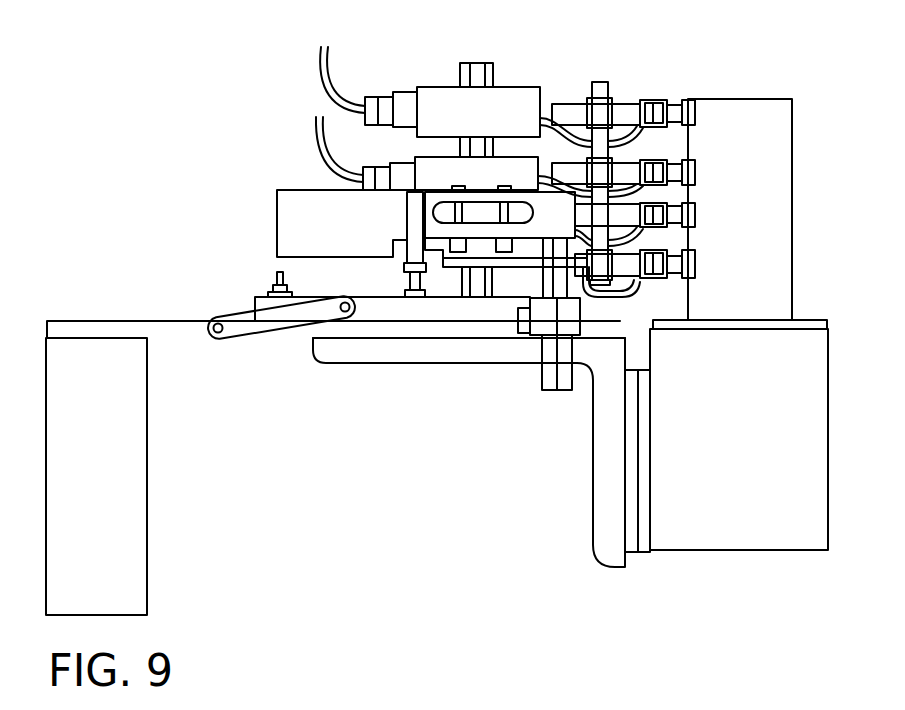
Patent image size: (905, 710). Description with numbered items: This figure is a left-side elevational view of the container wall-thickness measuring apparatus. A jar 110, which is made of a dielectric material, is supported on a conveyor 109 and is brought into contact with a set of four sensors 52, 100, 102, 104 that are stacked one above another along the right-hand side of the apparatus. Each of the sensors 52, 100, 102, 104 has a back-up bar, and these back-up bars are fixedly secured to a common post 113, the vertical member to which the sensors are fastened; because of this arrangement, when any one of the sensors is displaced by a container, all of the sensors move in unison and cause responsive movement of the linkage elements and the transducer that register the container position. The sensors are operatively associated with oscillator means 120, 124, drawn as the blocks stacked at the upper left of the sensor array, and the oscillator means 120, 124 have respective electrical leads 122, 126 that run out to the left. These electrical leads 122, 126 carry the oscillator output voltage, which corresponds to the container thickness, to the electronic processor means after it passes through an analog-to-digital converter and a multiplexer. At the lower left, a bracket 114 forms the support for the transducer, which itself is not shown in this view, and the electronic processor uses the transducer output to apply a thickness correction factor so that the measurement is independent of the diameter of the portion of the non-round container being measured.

The sensor 52 is at (672, 100).
The sensor 100 is at (672, 168).
The sensor 102 is at (675, 218).
The sensor 104 is at (675, 265).
The conveyor 109 is at (765, 540).
The jar 110 is at (752, 99).
The post 113 is at (600, 80).
The bracket 114 is at (133, 496).
The oscillator means 120 is at (443, 80).
The electrical lead 122 is at (322, 82).
The oscillator means 124 is at (525, 190).
The electrical lead 126 is at (318, 152).